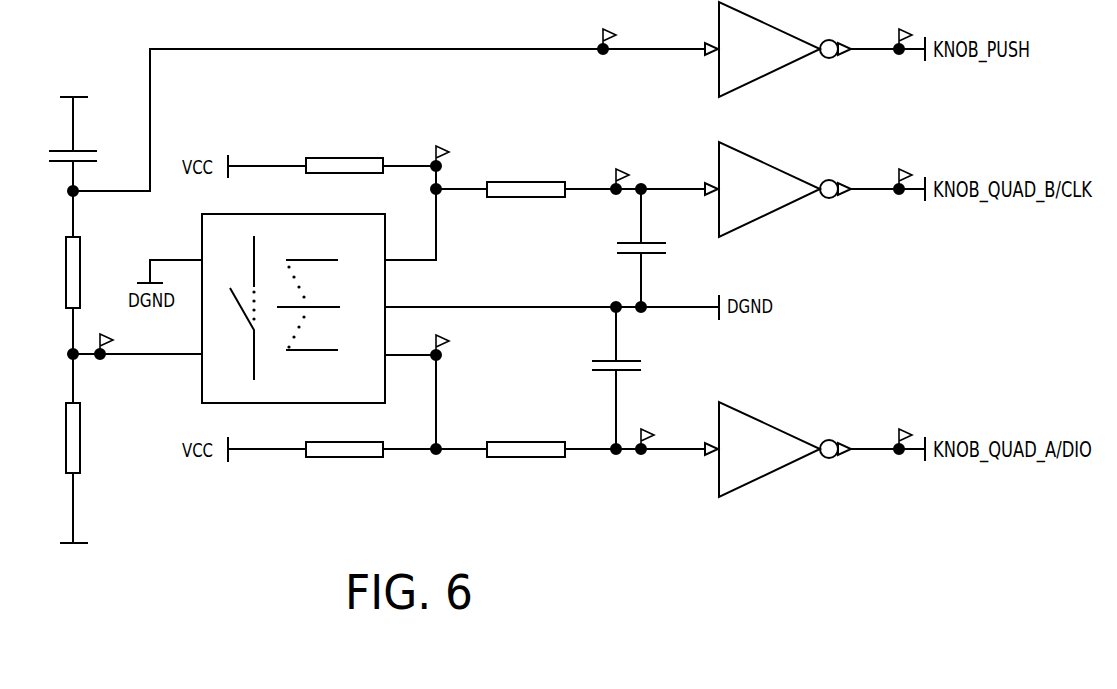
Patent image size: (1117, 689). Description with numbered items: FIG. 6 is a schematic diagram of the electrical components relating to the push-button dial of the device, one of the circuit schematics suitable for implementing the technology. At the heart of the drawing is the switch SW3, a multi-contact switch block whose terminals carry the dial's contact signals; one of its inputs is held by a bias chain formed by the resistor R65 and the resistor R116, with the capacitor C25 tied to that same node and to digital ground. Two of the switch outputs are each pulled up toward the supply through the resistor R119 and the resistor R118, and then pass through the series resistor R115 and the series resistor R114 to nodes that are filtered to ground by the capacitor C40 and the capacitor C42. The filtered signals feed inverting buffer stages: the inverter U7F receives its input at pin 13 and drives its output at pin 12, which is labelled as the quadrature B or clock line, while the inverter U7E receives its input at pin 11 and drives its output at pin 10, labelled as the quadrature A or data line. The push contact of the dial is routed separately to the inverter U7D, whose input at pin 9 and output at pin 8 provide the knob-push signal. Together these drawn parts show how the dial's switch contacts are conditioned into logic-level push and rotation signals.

The U7D input pin 9 is at (701, 39).
The U7D output pin 8 (KNOB_PUSH) 8 is at (881, 42).
The U7F input pin 13 is at (699, 179).
The U7F output pin 12 (KNOB_QUAD_B/CLK) 12 is at (881, 182).
The U7E input pin 11 is at (698, 439).
The U7E output pin 10 (KNOB_QUAD_A/DIO) 10 is at (881, 442).
The capacitor 10nF C25 is at (84, 132).
The resistor 10K R65 is at (92, 272).
The resistor 10K R116 is at (89, 461).
The rotary encoder switch E27 SW3 is at (293, 307).
The resistor 10K R119 is at (371, 167).
The resistor 10K R115 is at (526, 190).
The resistor 10K R118 is at (371, 450).
The resistor 10K R114 is at (526, 450).
The capacitor 10nF C40 is at (617, 248).
The capacitor 10nF C42 is at (592, 378).
The Schmitt-trigger inverter MC74HC14ADT U7D is at (804, 66).
The Schmitt-trigger inverter MC74HC14ADT U7F is at (802, 206).
The Schmitt-trigger inverter MC74HC14ADT U7E is at (801, 460).